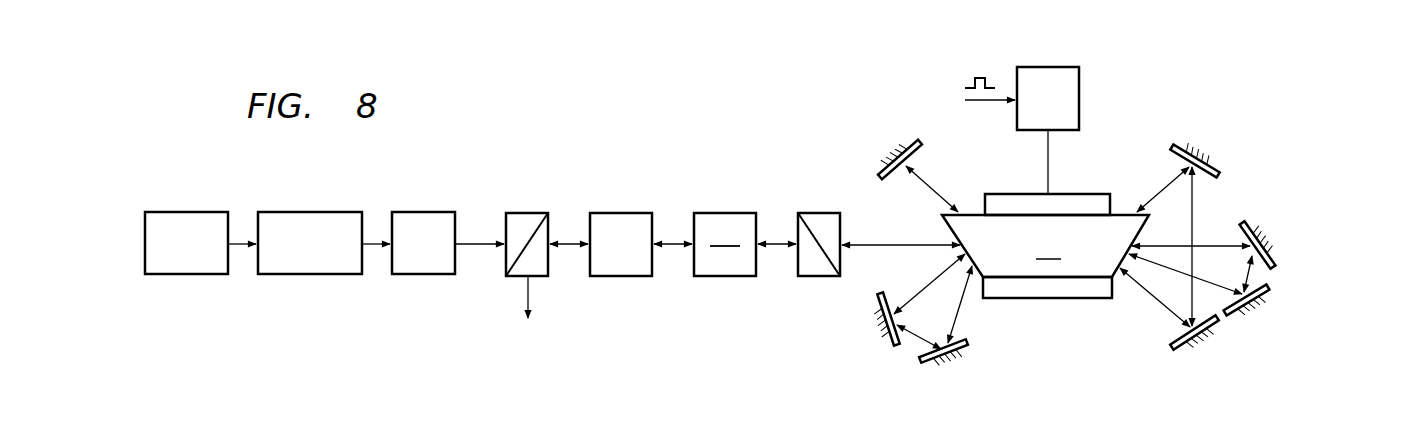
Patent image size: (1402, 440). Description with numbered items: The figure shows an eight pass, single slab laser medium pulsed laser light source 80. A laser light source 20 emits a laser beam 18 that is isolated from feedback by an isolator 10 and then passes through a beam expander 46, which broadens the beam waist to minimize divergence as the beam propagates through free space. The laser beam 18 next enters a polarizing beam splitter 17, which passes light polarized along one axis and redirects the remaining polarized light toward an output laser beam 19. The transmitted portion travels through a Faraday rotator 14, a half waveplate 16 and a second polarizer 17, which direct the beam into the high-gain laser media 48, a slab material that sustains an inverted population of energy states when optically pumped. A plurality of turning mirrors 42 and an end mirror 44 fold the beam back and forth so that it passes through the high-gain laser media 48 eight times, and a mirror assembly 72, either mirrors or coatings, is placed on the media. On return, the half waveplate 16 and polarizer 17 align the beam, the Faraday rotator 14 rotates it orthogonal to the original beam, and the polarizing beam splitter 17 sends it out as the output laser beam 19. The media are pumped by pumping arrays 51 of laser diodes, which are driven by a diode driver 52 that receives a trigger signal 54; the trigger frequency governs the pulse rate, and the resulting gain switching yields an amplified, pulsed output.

The laser light source 20 is at (182, 211).
The isolator 10 is at (310, 211).
The beam expander 46 is at (419, 211).
The laser beam 18 is at (470, 247).
The polarizing beam splitter 17 is at (522, 211).
The output laser beam 19 is at (529, 291).
The Faraday rotator 14 is at (615, 211).
The half waveplate 16 is at (728, 212).
The high-gain laser media 48 is at (1045, 246).
The mirror assembly 72 is at (1022, 292).
The pumping arrays 51 is at (1083, 200).
The diode driver 52 is at (1081, 97).
The trigger signal 54 is at (985, 104).
The end mirror 44 is at (893, 144).
The turning mirrors 42 is at (876, 333).
The eight pass, single slab laser medium pulsed laser light source 80 is at (1312, 120).